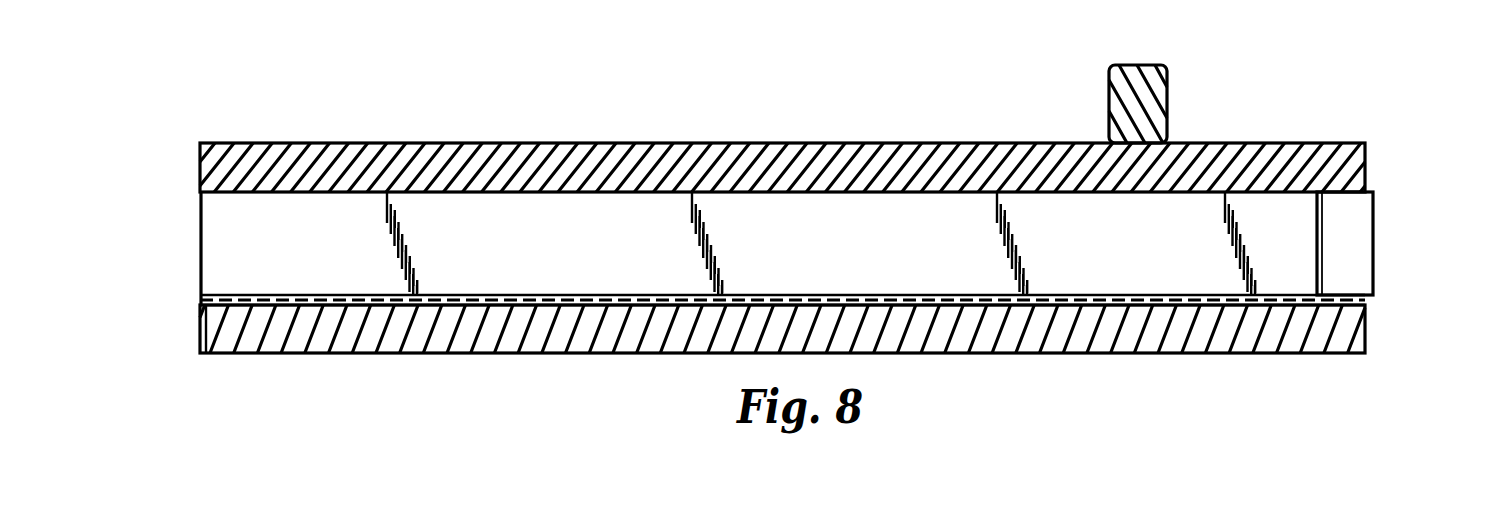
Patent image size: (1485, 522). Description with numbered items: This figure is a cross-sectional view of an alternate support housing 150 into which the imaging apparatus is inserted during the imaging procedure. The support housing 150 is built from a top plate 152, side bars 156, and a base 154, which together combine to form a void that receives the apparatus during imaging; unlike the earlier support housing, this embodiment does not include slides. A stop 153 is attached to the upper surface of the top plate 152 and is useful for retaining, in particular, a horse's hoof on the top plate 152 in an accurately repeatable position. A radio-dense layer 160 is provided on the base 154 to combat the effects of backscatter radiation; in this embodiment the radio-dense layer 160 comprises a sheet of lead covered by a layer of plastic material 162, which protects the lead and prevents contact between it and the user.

The support housing 150 is at (1226, 83).
The top plate 152 is at (848, 150).
The stop 153 is at (1130, 72).
The base 154 is at (541, 344).
The side bars 156 is at (212, 228).
The radio-dense layer 160 is at (510, 300).
The layer of plastic material 162 is at (300, 296).